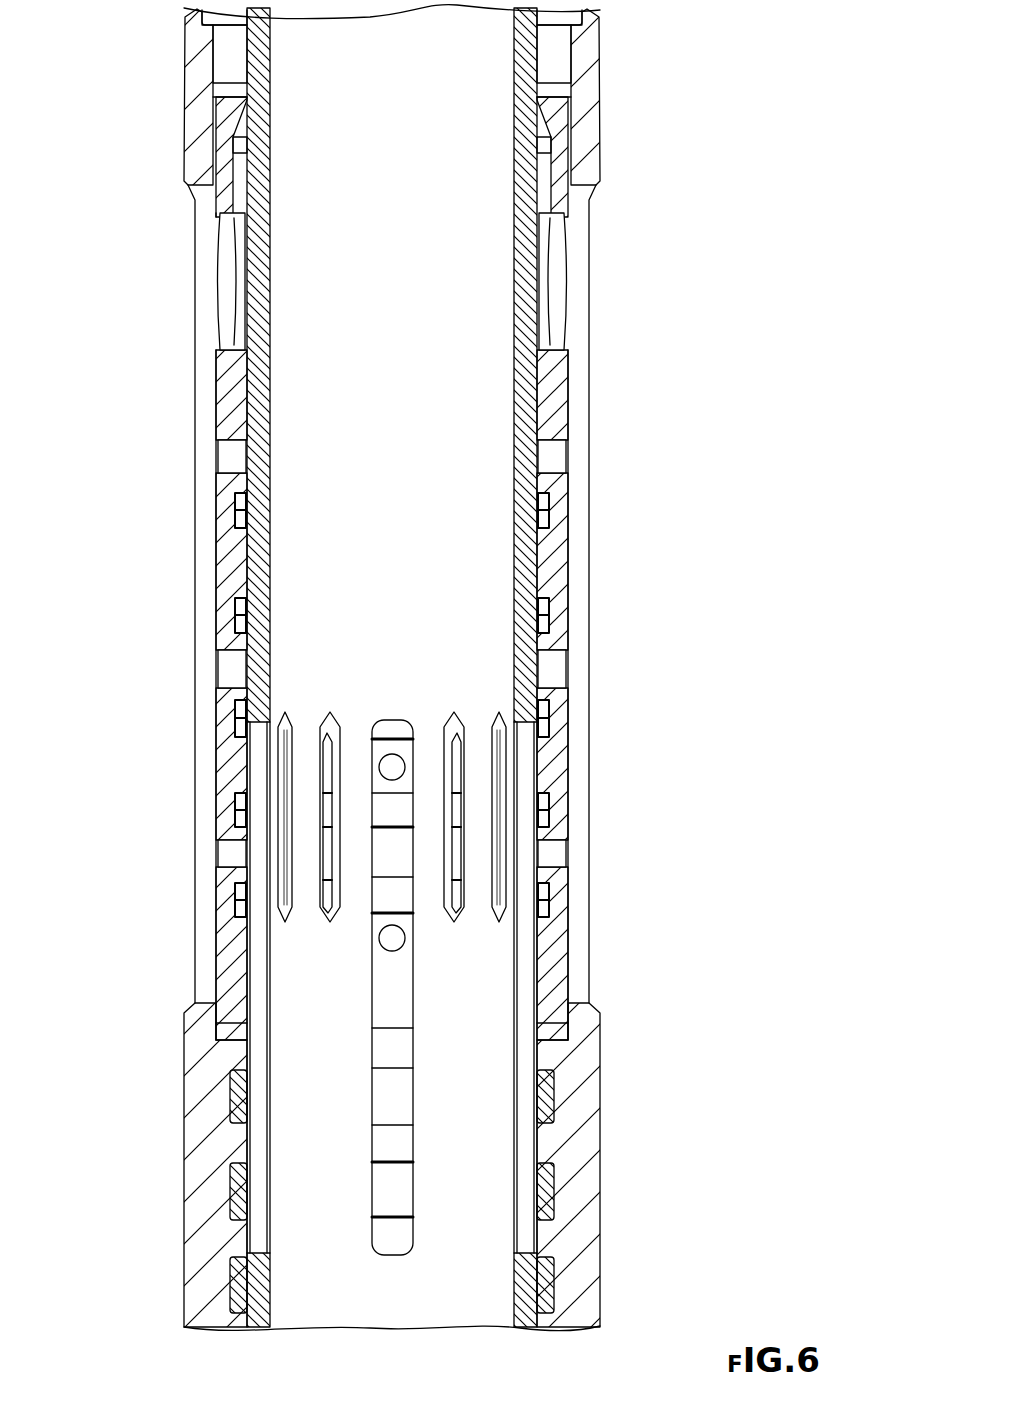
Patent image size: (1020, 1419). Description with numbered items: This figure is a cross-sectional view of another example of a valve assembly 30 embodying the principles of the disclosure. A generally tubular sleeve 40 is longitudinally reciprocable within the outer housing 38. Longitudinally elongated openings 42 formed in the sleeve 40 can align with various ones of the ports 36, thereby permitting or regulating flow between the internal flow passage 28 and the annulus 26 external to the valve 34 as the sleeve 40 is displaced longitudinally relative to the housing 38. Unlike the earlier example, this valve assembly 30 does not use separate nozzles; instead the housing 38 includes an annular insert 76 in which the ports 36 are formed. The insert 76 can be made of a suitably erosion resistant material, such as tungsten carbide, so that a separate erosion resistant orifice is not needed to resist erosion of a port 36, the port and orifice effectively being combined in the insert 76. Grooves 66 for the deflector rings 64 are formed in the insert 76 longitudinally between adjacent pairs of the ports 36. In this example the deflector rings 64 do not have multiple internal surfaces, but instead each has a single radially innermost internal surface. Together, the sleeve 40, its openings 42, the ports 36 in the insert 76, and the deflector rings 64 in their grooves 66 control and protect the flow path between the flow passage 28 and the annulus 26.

The valve assembly 30 is at (737, 83).
The annulus 26 is at (62, 320).
The flow passage 28 is at (388, 200).
The valve 34 is at (184, 1078).
The ports 36 is at (226, 298).
The outer housing 38 is at (602, 1045).
The sleeve 40 is at (232, 150).
The openings 42 is at (258, 758).
The deflector rings 64 is at (545, 510).
The grooves 66 is at (246, 510).
The annular insert 76 is at (216, 566).